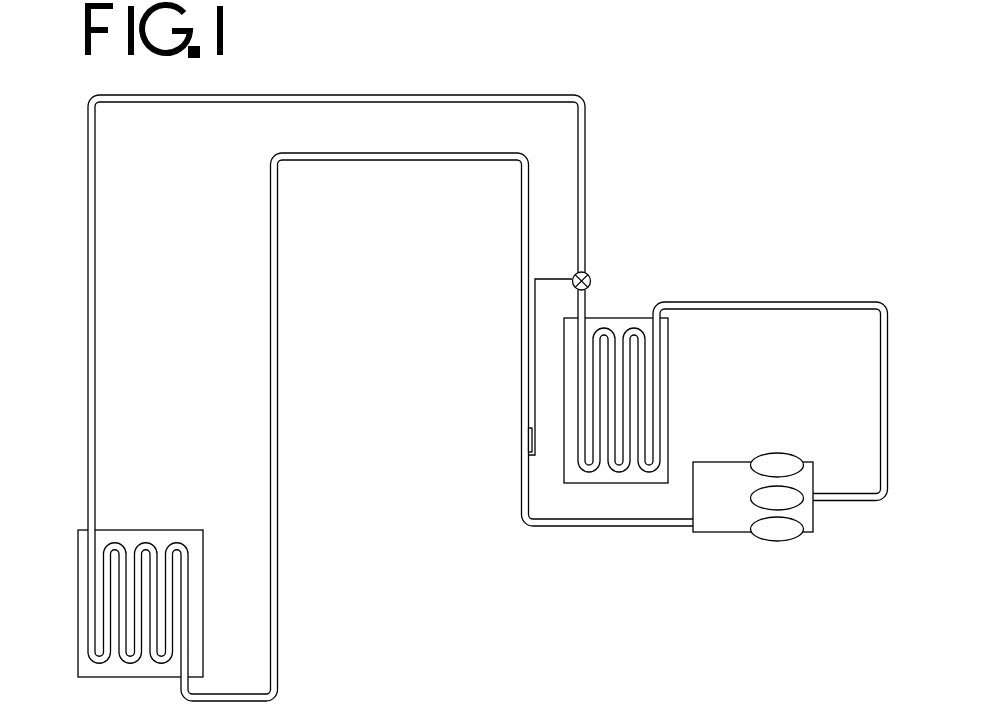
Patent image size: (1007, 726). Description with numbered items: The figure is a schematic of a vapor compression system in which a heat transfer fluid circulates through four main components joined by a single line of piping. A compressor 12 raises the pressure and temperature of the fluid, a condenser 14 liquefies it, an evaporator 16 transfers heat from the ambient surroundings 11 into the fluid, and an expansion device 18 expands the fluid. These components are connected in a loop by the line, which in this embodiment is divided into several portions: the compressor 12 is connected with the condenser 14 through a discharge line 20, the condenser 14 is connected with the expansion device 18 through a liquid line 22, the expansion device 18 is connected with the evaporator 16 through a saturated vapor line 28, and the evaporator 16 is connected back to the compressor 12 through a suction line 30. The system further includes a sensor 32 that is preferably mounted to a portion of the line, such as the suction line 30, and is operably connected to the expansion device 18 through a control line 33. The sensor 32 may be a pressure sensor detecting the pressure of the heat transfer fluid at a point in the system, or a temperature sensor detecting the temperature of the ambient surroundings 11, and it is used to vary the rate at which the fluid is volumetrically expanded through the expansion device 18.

The ambient surroundings 11 is at (55, 634).
The compressor 12 is at (813, 527).
The condenser 14 is at (670, 378).
The evaporator 16 is at (122, 530).
The expansion device 18 is at (592, 280).
The discharge line 20 is at (888, 343).
The liquid line 22 is at (578, 303).
The saturated vapor line 28 is at (409, 95).
The suction line 30 is at (397, 160).
The sensor 32 is at (524, 433).
The control line 33 is at (542, 278).